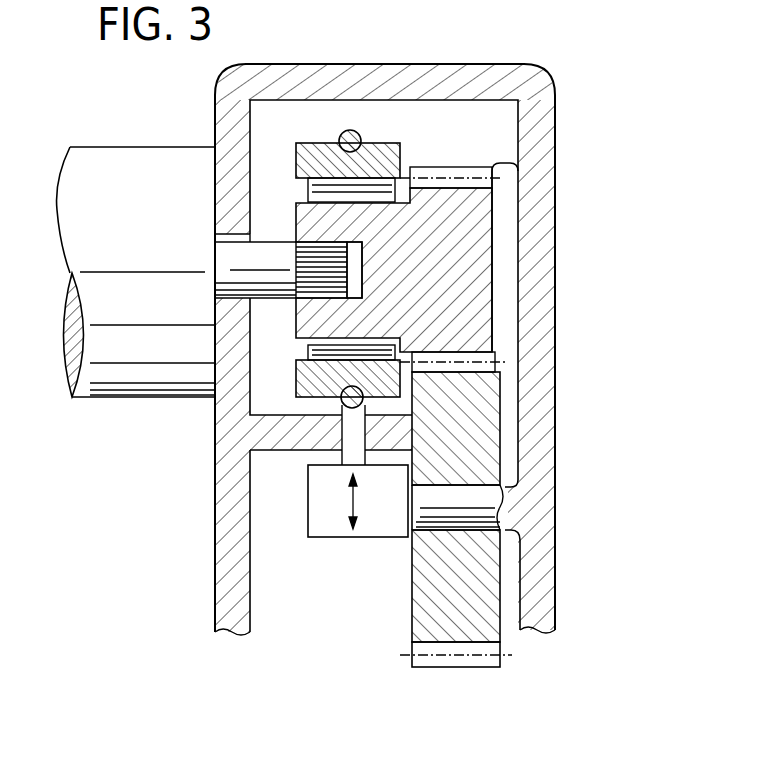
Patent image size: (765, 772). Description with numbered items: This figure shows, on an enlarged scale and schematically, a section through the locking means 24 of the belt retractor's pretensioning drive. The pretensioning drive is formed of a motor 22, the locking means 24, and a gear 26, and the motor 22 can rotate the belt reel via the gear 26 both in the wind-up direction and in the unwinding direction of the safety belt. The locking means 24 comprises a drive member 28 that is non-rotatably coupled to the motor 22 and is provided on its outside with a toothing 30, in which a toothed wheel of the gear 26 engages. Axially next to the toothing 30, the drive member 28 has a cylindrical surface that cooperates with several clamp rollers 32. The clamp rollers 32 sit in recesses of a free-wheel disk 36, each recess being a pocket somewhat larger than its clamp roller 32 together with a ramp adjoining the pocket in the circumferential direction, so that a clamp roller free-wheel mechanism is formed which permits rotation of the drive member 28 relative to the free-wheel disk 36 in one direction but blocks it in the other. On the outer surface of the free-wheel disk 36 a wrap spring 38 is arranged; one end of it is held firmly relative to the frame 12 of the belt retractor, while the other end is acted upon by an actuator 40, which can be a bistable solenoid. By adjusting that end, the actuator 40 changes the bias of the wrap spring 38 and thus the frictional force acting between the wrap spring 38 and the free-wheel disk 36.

The frame 12 is at (538, 386).
The motor 22 is at (128, 168).
The locking means 24 is at (563, 93).
The gear 26 is at (482, 585).
The drive member 28 is at (476, 250).
The toothing 30 is at (524, 163).
The clamp rollers 32 is at (370, 188).
The free-wheel disk 36 is at (317, 153).
The wrap spring 38 is at (352, 130).
The actuator 40 is at (338, 520).